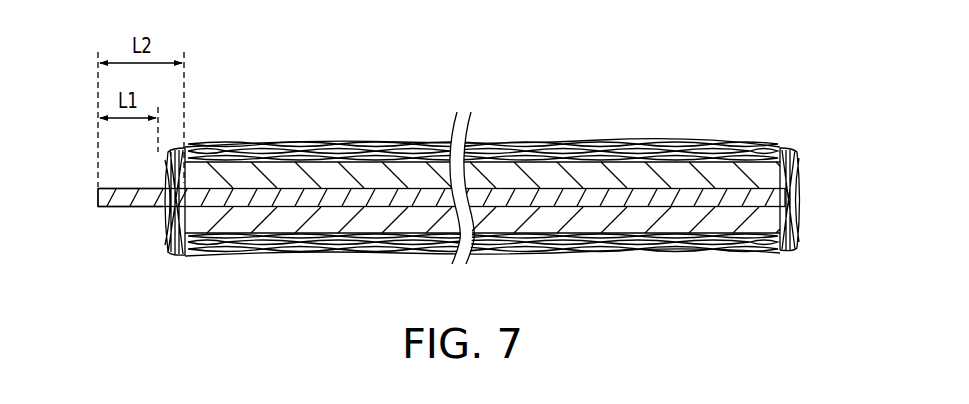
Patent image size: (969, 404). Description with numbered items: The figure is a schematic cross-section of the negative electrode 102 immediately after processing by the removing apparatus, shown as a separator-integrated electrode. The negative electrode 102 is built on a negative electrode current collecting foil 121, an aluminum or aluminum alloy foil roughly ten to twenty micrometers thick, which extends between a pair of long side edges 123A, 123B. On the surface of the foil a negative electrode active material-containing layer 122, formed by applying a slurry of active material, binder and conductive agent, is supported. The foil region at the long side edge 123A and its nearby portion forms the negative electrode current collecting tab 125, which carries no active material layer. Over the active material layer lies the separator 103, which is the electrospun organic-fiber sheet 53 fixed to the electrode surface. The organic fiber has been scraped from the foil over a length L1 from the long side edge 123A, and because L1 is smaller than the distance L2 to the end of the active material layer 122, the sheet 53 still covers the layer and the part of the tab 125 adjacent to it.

The negative electrode 102 is at (637, 178).
The separator 103 is at (276, 141).
The sheet 53 is at (483, 243).
The negative electrode current collecting foil 121 is at (380, 194).
The negative electrode active material-containing layer 122 is at (540, 175).
The long side edge 123A is at (98, 197).
The long side edge 123B is at (782, 195).
The negative electrode current collecting tab 125 is at (139, 207).